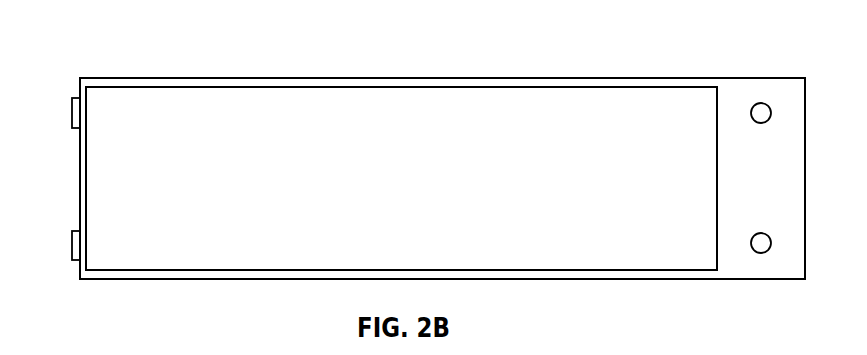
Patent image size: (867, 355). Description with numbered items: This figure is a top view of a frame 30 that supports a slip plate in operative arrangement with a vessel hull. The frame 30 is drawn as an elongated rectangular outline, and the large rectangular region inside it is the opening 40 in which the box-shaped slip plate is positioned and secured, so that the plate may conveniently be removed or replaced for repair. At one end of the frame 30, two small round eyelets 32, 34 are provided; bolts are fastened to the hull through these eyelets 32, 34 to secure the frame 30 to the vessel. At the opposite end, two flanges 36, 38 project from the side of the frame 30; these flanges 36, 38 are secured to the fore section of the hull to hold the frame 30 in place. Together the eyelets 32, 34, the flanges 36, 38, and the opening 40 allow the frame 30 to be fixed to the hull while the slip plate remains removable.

The frame 30 is at (128, 38).
The eyelet 32 is at (758, 123).
The eyelet 34 is at (764, 234).
The flange 36 is at (72, 246).
The flange 38 is at (72, 114).
The opening 40 is at (520, 122).